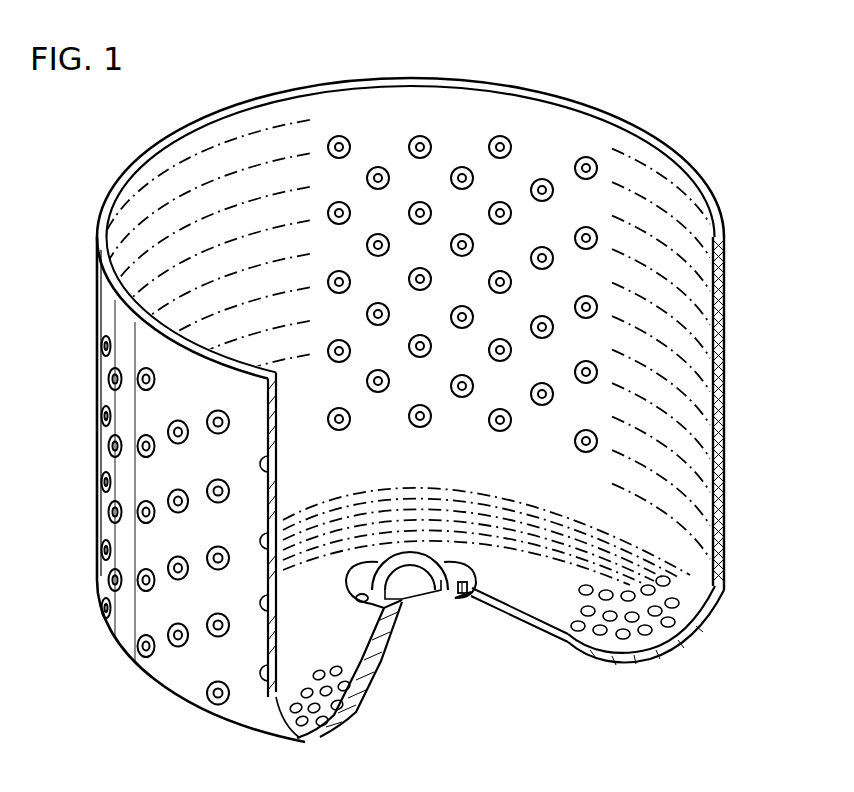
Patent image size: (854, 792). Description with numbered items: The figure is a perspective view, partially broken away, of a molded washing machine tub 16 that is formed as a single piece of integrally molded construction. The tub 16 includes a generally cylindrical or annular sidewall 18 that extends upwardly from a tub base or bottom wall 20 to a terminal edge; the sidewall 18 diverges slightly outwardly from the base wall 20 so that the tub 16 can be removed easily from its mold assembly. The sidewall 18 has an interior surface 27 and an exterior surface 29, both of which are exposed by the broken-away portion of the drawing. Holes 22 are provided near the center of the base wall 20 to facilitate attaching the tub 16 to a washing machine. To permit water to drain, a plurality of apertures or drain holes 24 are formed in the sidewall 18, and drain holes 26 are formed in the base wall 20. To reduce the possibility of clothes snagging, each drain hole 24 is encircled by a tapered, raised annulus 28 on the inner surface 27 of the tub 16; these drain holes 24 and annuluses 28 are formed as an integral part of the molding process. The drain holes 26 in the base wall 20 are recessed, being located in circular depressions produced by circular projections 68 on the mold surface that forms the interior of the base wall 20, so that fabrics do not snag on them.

The molded tub 16 is at (752, 281).
The sidewall 18 is at (97, 222).
The tub base wall 20 is at (542, 630).
The holes 22 is at (358, 599).
The drain holes 24 is at (418, 146).
The drain holes 26 is at (680, 642).
The interior surface 27 is at (208, 162).
The raised annulus 28 is at (503, 146).
The exterior surface 29 is at (248, 695).
The circular projections 68 is at (340, 706).